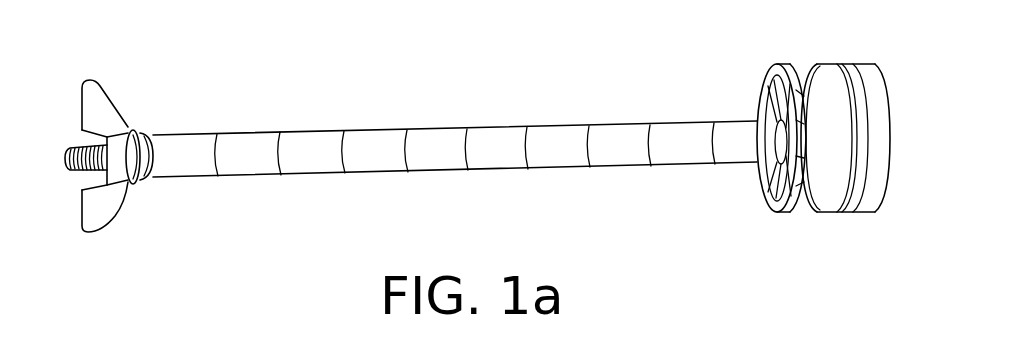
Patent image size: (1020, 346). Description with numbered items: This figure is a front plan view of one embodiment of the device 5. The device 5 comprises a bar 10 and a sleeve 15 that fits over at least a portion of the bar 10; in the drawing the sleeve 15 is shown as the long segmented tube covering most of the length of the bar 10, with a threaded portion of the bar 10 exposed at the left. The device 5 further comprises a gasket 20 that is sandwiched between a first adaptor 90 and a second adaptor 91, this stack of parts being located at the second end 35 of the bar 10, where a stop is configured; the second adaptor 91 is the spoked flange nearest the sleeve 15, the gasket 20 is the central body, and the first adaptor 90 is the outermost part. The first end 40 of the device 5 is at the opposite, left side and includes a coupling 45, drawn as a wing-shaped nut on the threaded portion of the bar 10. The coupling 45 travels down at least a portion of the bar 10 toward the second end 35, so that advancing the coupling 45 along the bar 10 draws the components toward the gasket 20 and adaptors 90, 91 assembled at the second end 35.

The device 5 is at (57, 82).
The bar 10 is at (67, 152).
The sleeve 15 is at (467, 158).
The gasket 20 is at (832, 87).
The second end 35 is at (875, 223).
The first end 40 is at (173, 235).
The coupling 45 is at (103, 118).
The first adaptor 90 is at (877, 123).
The second adaptor 91 is at (793, 92).